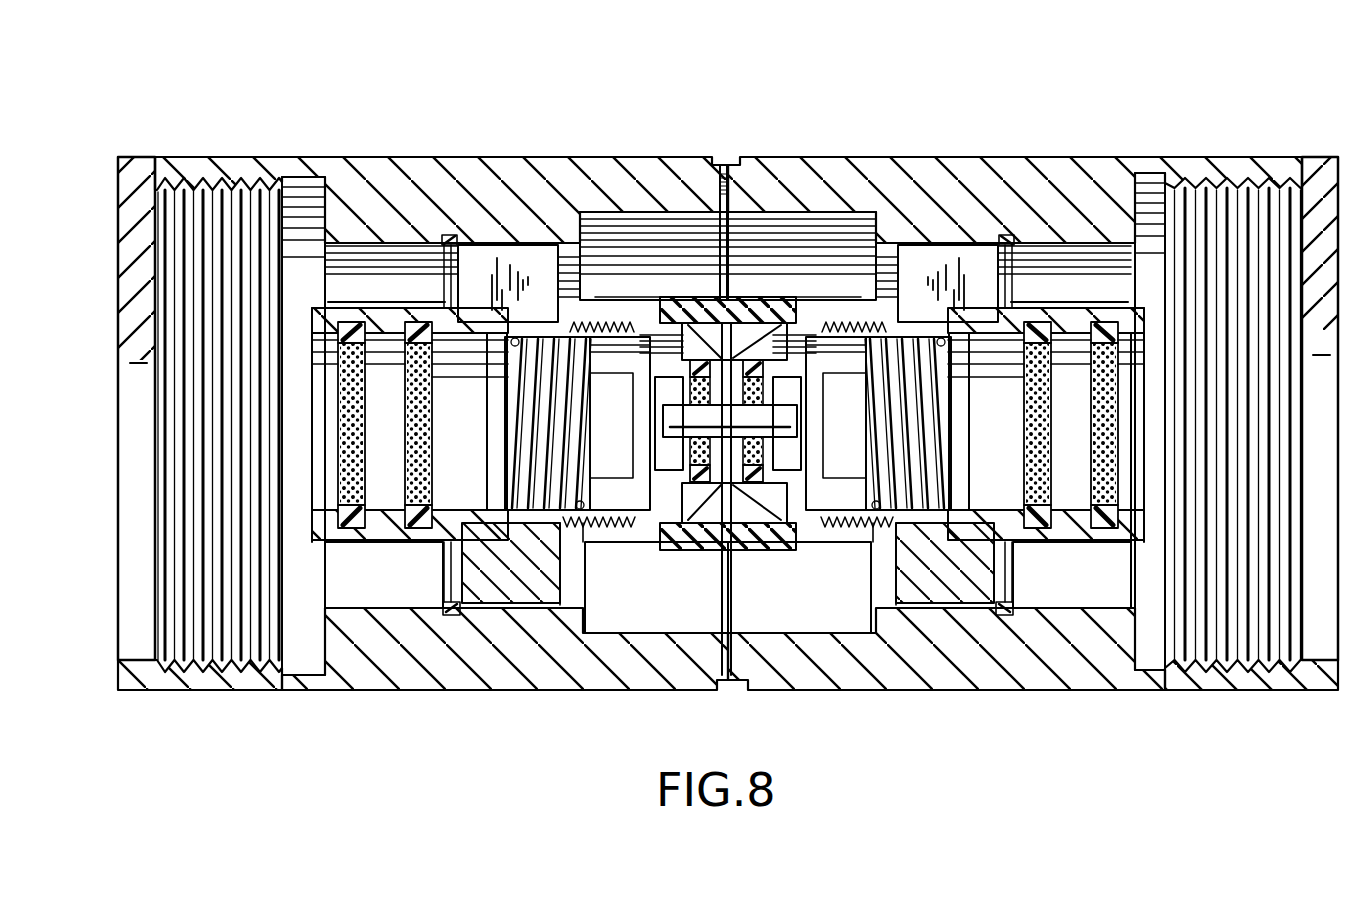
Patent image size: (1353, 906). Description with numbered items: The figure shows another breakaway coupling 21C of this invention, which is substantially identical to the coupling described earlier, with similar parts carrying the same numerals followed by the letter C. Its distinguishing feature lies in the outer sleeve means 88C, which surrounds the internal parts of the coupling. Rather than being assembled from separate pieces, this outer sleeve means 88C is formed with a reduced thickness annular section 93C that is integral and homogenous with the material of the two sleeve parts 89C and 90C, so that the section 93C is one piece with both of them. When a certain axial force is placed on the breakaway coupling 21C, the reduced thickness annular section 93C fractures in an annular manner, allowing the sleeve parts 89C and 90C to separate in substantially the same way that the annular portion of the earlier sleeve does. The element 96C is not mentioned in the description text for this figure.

The breakaway coupling 21C is at (728, 394).
The outer sleeve means 88C is at (590, 689).
The sleeve part 89C is at (438, 172).
The sleeve part 90C is at (1071, 156).
The reduced thickness annular section 93C is at (734, 156).
The spindle rod 96C is at (721, 158).